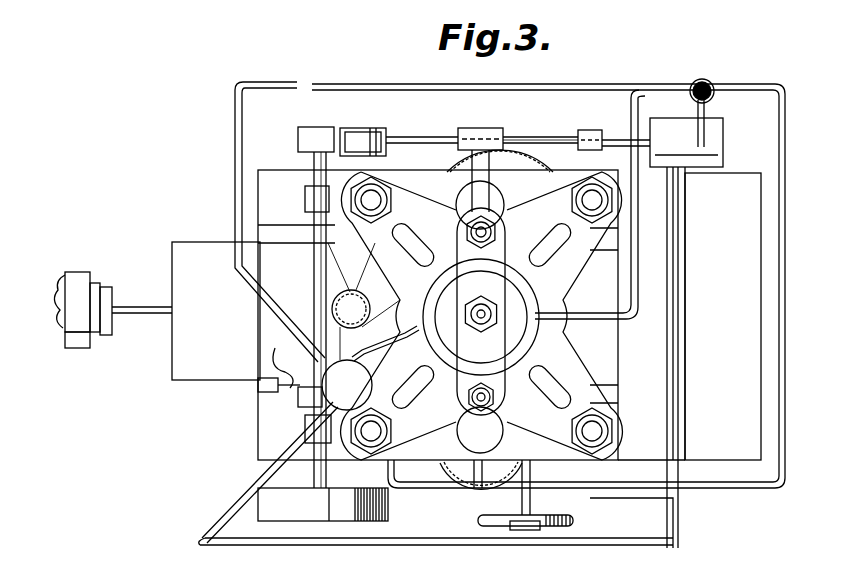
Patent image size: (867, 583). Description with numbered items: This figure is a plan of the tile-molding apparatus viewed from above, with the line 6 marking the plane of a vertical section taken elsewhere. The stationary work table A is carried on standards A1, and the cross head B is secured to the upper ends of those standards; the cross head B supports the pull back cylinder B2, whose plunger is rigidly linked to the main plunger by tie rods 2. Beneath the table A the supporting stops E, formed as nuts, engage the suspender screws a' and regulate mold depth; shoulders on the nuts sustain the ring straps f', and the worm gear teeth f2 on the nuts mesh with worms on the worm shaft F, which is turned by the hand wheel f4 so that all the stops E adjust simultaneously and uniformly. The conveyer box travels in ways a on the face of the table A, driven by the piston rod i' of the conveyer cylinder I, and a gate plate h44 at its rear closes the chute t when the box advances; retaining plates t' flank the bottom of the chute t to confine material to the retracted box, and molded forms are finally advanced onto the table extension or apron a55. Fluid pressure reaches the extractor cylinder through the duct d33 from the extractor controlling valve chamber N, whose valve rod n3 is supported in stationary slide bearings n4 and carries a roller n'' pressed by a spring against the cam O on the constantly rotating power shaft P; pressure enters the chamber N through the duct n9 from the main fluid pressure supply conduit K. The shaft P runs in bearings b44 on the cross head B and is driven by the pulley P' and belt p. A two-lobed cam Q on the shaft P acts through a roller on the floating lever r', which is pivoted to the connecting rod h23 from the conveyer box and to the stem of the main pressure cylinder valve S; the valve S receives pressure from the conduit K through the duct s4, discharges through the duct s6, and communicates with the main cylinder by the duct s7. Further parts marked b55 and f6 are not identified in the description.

The section line 6 is at (480, 82).
The duct s4 is at (280, 213).
The duct s6 is at (668, 375).
The conveyer cylinder I is at (77, 302).
The piston rod i' is at (142, 299).
The gate plate h44 is at (216, 311).
The power shaft P is at (471, 320).
The ways a is at (438, 335).
The cam O is at (316, 139).
The roller n'' is at (373, 129).
The stationary slide bearings n4 is at (518, 128).
The valve rod n3 is at (540, 128).
The extractor controlling valve chamber N is at (686, 142).
The duct n9 is at (718, 114).
The main fluid pressure supply conduit K is at (710, 88).
The bearings b44 is at (319, 431).
The connecting rod h23 is at (262, 388).
The floating lever r' is at (279, 362).
The cam Q is at (303, 387).
The main pressure cylinder valve S is at (347, 385).
The chute t is at (351, 309).
The retaining plates t' is at (336, 301).
The duct s7 is at (385, 341).
The pulley P' is at (323, 504).
The belt p is at (386, 500).
The cross head B is at (482, 316).
The work table A is at (492, 316).
The standards A1 is at (481, 315).
The pull back cylinder B2 is at (512, 305).
The suspender screws a' is at (468, 317).
The tie rods 2 is at (492, 226).
The supporting stops E is at (436, 468).
The ring straps f' is at (476, 332).
The worm gear teeth f2 is at (447, 497).
The duct d33 is at (687, 403).
The worm shaft F is at (541, 469).
The hand wheel f4 is at (574, 522).
The frame f6 is at (742, 488).
The pipe b55 is at (640, 226).
The table extension or apron a55 is at (723, 316).